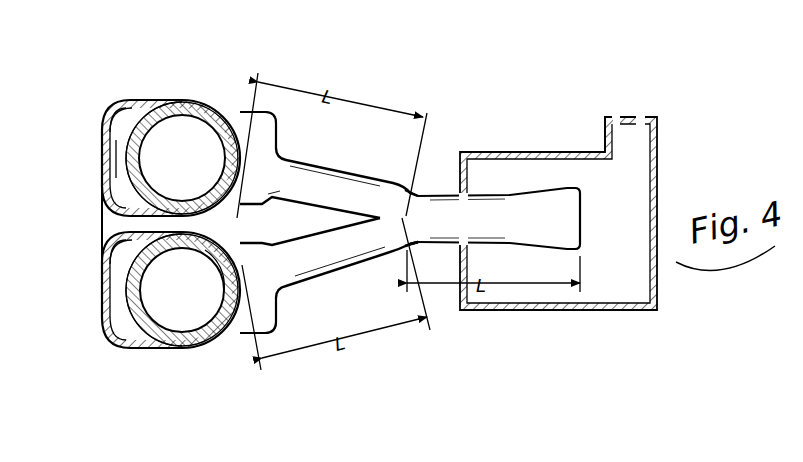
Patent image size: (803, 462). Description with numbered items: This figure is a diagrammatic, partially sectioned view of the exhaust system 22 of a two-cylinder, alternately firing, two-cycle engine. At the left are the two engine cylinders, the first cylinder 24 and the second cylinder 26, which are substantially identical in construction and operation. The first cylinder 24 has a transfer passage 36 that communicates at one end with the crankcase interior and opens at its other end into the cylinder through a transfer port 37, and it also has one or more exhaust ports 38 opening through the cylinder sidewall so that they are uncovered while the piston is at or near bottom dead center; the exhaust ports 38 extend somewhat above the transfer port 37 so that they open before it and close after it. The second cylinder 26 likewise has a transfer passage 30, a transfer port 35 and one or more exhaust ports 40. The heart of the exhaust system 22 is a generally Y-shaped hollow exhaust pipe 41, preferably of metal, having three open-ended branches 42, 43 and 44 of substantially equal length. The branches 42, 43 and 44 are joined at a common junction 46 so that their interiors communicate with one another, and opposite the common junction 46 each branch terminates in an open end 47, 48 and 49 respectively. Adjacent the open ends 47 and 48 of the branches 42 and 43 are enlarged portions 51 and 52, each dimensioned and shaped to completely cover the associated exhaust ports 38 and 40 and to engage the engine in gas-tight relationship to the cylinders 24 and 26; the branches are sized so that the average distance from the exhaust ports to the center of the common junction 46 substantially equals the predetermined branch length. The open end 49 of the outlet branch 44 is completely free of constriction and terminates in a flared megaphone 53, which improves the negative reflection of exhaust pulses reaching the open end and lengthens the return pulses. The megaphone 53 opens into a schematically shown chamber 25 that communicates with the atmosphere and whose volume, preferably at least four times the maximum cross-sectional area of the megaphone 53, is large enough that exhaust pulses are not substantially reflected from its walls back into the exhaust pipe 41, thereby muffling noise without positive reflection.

The exhaust system 22 is at (483, 176).
The cylinder 24 is at (163, 338).
The chamber 25 is at (571, 157).
The cylinder 26 is at (158, 100).
The transfer passage 30 is at (120, 136).
The transfer port 35 is at (126, 172).
The transfer passage 36 is at (122, 288).
The transfer port 37 is at (158, 258).
The exhaust ports 38 is at (219, 268).
The exhaust ports 40 is at (224, 152).
The exhaust pipe 41 is at (403, 178).
The branch 42 is at (330, 262).
The branch 43 is at (310, 173).
The branch 44 is at (547, 227).
The common junction 46 is at (418, 236).
The open end 47 is at (238, 328).
The open end 48 is at (233, 113).
The open end 49 is at (582, 198).
The enlarged portion 51 is at (280, 319).
The enlarged portion 52 is at (280, 128).
The megaphone 53 is at (568, 255).